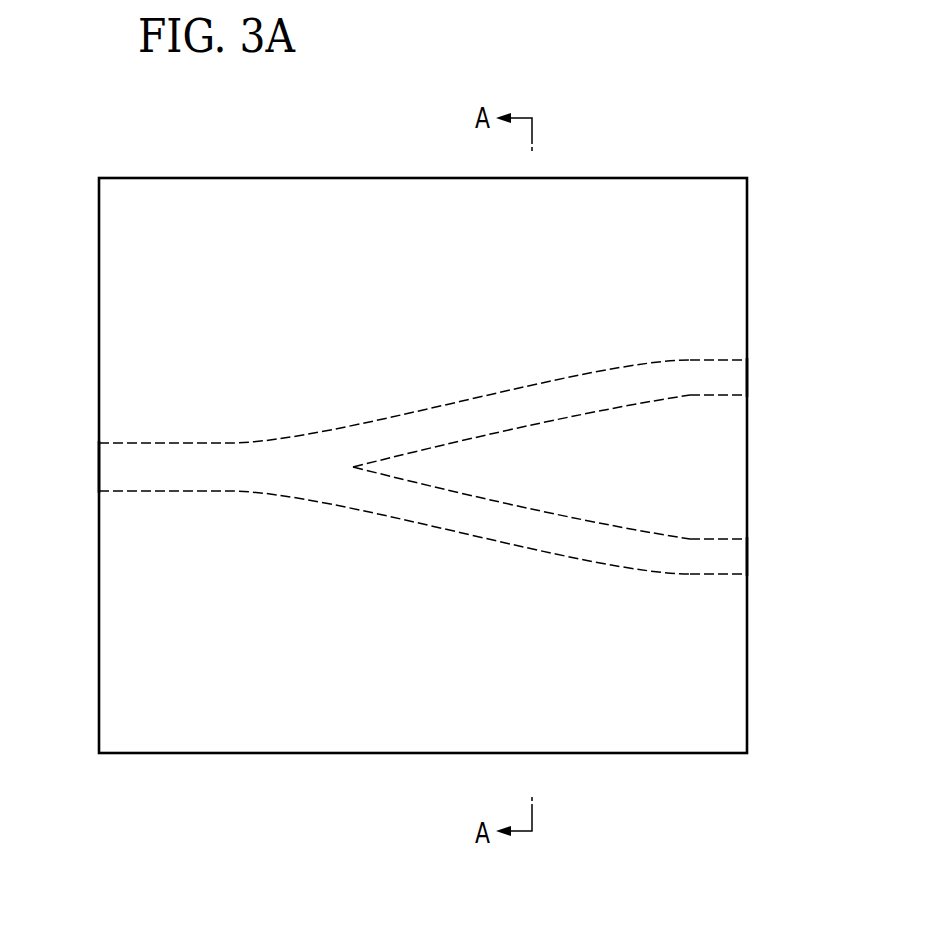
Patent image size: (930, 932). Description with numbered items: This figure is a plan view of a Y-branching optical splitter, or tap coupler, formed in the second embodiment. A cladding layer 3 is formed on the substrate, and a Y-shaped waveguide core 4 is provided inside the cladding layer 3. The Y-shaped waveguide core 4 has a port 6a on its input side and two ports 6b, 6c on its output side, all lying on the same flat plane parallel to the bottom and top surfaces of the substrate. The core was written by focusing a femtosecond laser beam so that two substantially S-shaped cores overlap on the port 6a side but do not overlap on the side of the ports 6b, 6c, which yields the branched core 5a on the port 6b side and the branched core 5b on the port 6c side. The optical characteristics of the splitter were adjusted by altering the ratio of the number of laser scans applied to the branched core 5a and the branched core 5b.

The cladding layer 3 is at (728, 215).
The Y-shaped waveguide core 4 is at (683, 357).
The branched core 5a is at (733, 373).
The branched core 5b is at (726, 565).
The port 6a is at (115, 470).
The port 6b is at (745, 382).
The port 6c is at (735, 562).